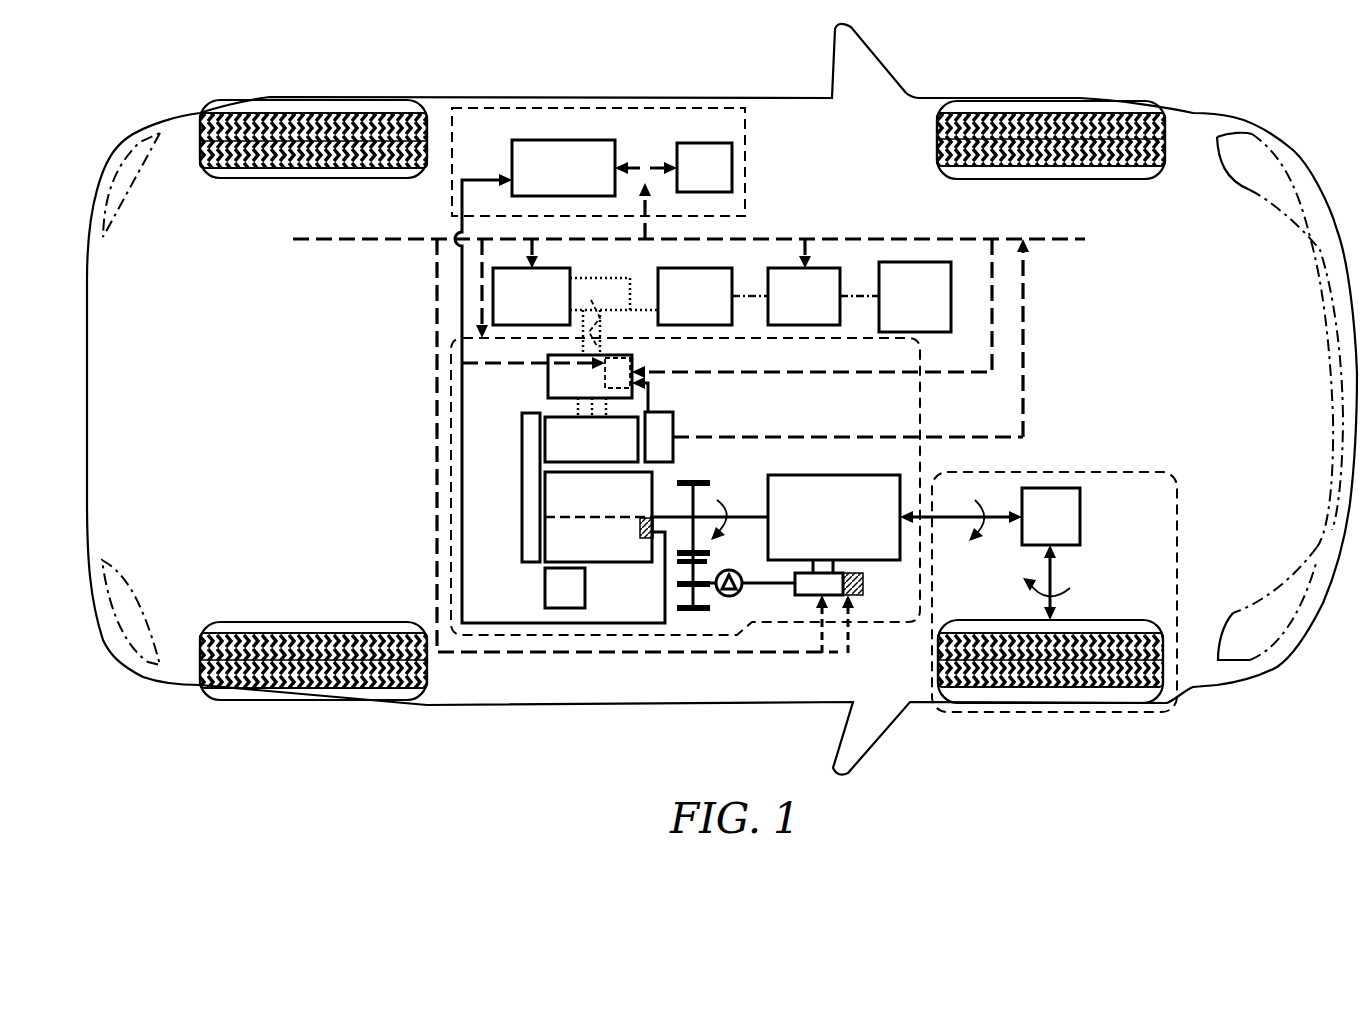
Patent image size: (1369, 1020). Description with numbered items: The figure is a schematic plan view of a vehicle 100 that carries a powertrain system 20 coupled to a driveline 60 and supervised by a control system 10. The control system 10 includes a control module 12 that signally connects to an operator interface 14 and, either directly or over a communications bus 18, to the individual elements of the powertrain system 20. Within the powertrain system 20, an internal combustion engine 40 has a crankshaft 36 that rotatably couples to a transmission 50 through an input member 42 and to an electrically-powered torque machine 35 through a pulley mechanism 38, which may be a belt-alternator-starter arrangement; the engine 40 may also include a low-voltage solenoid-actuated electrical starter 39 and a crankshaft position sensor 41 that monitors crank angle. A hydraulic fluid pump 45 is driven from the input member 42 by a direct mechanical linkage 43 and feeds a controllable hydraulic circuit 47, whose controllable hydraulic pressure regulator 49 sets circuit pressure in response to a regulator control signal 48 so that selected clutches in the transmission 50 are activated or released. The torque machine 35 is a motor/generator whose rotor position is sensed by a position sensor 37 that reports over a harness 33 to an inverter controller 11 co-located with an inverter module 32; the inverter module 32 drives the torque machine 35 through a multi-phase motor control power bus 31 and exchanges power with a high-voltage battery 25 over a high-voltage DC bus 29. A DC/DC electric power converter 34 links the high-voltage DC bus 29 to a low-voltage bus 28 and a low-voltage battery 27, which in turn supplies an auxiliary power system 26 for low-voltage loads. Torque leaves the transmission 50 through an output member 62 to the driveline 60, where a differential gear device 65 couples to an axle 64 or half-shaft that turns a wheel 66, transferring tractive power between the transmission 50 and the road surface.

The vehicle 100 is at (1106, 214).
The control system 10 is at (478, 137).
The control module 12 is at (550, 182).
The operator interface 14 is at (692, 182).
The communications bus 18 is at (375, 230).
The powertrain system 20 is at (932, 393).
The high-voltage battery 25 is at (518, 310).
The auxiliary power system 26 is at (902, 310).
The low-voltage battery 27 is at (791, 310).
The low-voltage bus 28 is at (740, 295).
The high-voltage DC bus 29 is at (630, 309).
The multi-phase motor control power bus 31 is at (572, 404).
The inverter module 32 is at (559, 391).
The inverter controller 11 is at (633, 362).
The harness 33 is at (651, 402).
The DC/DC electric power converter 34 is at (682, 310).
The electrically-powered torque machine 35 is at (578, 453).
The crankshaft 36 is at (612, 516).
The position sensor 37 is at (677, 427).
The pulley mechanism 38 is at (520, 488).
The low-voltage solenoid-actuated electrical starter 39 is at (543, 597).
The internal combustion engine 40 is at (585, 557).
The crankshaft position sensor 41 is at (650, 539).
The input member 42 is at (748, 516).
The direct mechanical linkage 43 is at (690, 610).
The hydraulic fluid pump 45 is at (722, 597).
The controllable hydraulic circuit 47 is at (807, 597).
The regulator control signal 48 is at (838, 676).
The controllable hydraulic pressure regulator 49 is at (862, 596).
The transmission 50 is at (820, 531).
The driveline 60 is at (1085, 443).
The output member 62 is at (951, 516).
The axle 64 is at (1070, 577).
The differential gear device 65 is at (1038, 531).
The wheel 66 is at (1018, 616).